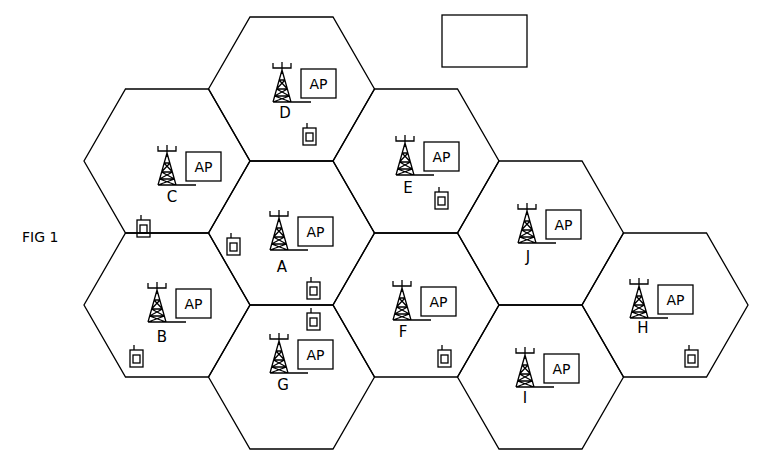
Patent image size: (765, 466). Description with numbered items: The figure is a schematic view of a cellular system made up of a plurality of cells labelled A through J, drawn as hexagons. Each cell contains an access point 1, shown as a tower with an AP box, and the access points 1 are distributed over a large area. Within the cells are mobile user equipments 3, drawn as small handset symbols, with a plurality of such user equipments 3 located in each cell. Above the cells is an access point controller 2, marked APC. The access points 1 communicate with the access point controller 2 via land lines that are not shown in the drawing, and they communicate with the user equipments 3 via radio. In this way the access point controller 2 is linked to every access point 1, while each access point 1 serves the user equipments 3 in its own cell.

The access point 1 is at (700, 275).
The access point controller 2 is at (527, 53).
The user equipment 3 is at (680, 402).